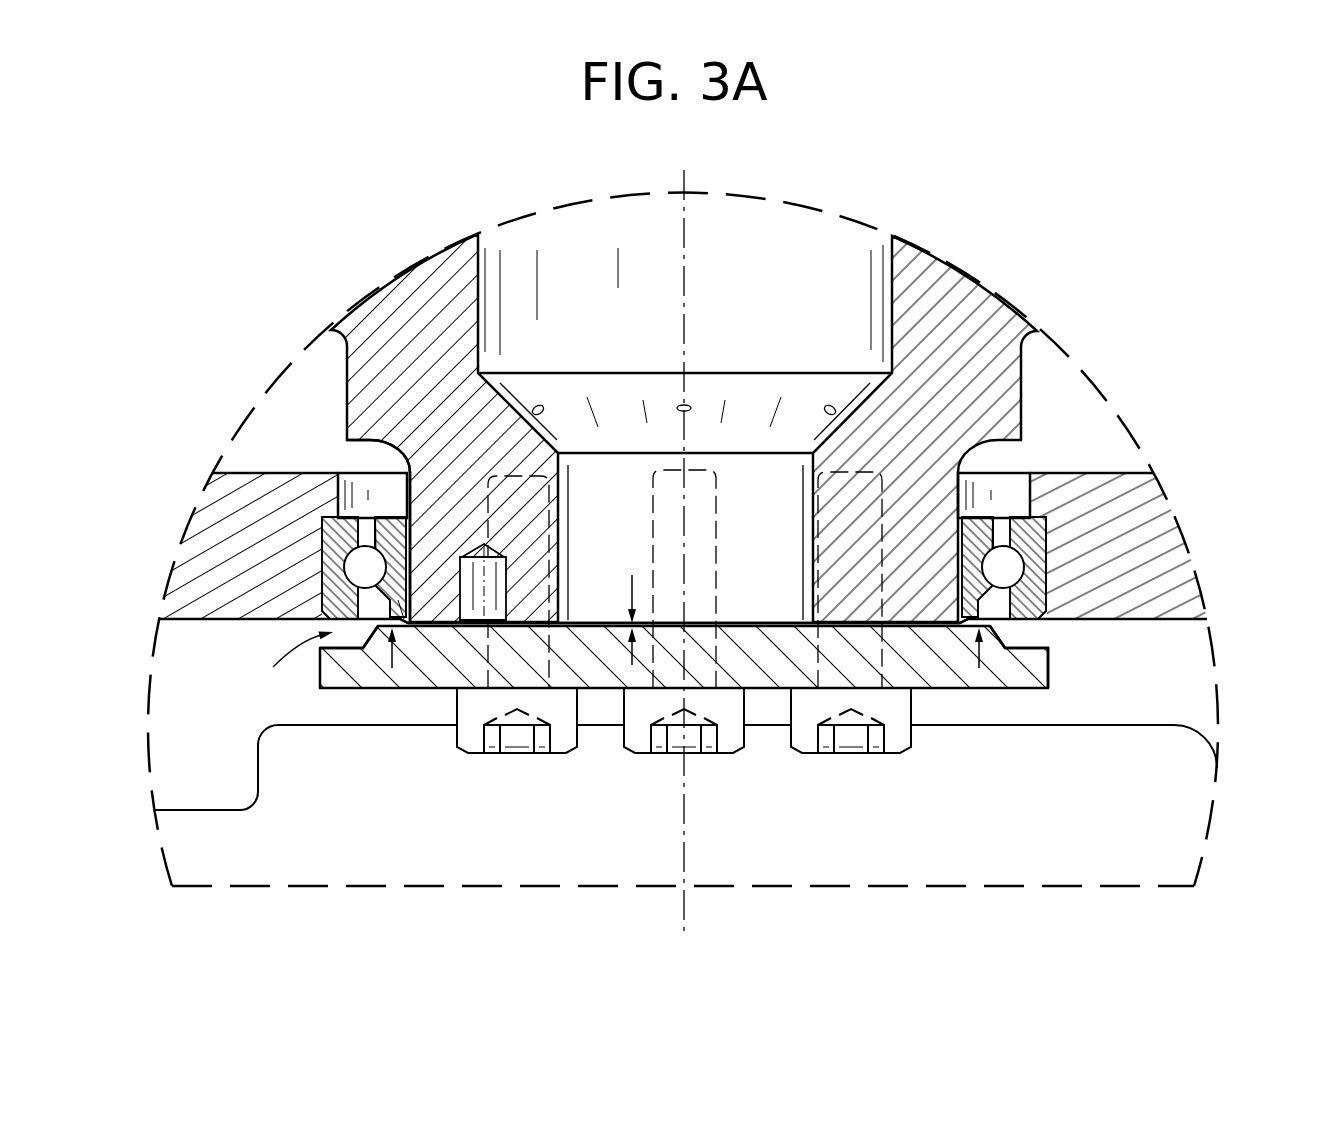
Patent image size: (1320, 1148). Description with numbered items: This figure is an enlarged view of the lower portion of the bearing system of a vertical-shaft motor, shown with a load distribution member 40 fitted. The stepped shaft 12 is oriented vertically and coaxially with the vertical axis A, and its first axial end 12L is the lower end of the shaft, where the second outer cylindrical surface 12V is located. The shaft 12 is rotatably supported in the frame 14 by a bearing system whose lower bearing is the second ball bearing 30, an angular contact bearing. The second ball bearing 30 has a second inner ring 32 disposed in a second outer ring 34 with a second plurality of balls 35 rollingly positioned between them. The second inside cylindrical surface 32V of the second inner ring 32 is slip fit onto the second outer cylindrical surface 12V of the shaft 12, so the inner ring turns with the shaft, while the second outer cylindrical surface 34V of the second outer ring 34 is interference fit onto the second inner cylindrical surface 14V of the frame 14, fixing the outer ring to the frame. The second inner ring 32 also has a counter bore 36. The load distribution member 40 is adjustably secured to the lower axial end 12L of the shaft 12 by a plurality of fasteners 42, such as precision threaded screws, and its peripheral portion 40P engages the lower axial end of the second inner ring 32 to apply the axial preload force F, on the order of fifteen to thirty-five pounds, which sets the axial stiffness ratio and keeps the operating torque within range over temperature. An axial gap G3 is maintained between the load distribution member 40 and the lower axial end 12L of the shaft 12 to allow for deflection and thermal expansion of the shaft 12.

The stepped shaft 12 is at (964, 312).
The first axial end of the shaft 12L is at (736, 632).
The second outer cylindrical surface 12V is at (378, 624).
The frame 14 is at (207, 547).
The second inner cylindrical surface of the frame 14V is at (1035, 548).
The second ball bearing 30 is at (284, 662).
The second inner ring 32 is at (360, 440).
The second inside cylindrical surface 32V is at (405, 600).
The second outer ring 34 is at (325, 597).
The second outer cylindrical surface of the second outer ring 34V is at (1060, 580).
The second plurality of balls 35 is at (350, 570).
The counter bore 36 is at (1057, 620).
The load distribution member 40 is at (950, 655).
The peripheral portion 40P is at (365, 648).
The fasteners 42 is at (492, 740).
The axial preload force F is at (392, 668).
The axial gap G3 is at (632, 665).
The vertical axis A is at (684, 822).